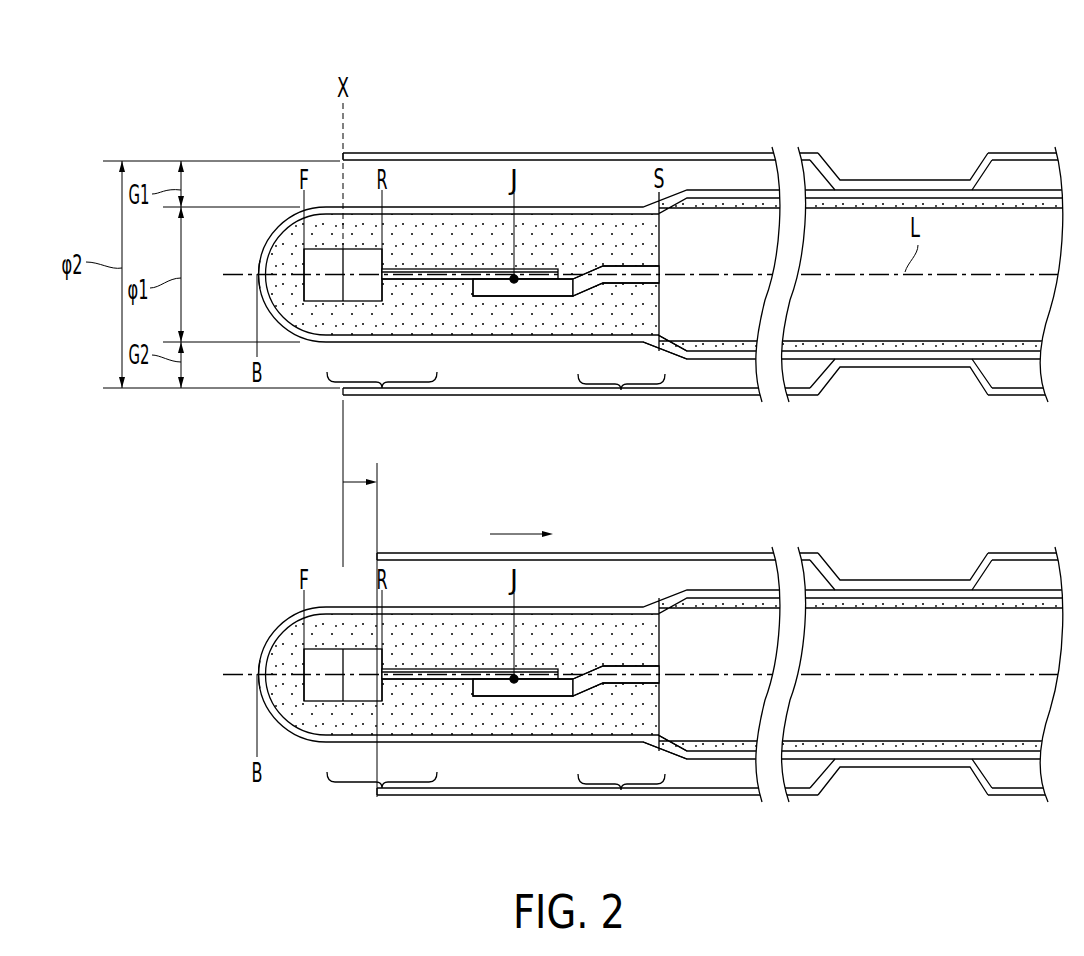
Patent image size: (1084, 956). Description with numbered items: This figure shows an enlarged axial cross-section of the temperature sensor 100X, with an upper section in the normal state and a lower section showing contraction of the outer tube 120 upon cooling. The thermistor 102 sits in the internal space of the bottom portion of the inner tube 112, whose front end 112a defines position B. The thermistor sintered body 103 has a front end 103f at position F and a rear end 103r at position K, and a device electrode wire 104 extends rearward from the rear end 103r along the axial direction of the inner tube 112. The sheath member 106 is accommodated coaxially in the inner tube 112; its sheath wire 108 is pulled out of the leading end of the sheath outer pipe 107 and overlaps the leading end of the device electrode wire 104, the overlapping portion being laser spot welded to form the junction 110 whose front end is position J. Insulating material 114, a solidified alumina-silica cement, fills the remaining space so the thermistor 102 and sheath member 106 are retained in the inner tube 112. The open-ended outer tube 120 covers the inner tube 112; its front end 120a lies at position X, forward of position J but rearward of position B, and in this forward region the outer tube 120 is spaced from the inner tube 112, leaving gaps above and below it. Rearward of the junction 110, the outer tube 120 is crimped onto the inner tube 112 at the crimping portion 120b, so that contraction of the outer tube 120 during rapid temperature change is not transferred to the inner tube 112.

The device 100X is at (458, 67).
The thermistor 102 is at (382, 598).
The thermistor sintered body 103 is at (322, 292).
The front end of thermistor sintered body 103f is at (304, 262).
The rear end of thermistor sintered body 103r is at (382, 262).
The device electrode wire 104 is at (443, 279).
The sheath member 106 is at (621, 600).
The sheath outer pipe 107 is at (670, 312).
The sheath wire 108 is at (622, 280).
The junction 110 is at (515, 282).
The inner tube 112 is at (570, 208).
The front end of inner tube 112a is at (258, 277).
The insulating material 114 is at (458, 322).
The outer tube 120 is at (598, 153).
The front end of outer tube 120a is at (343, 160).
The crimping portion 120b is at (980, 147).